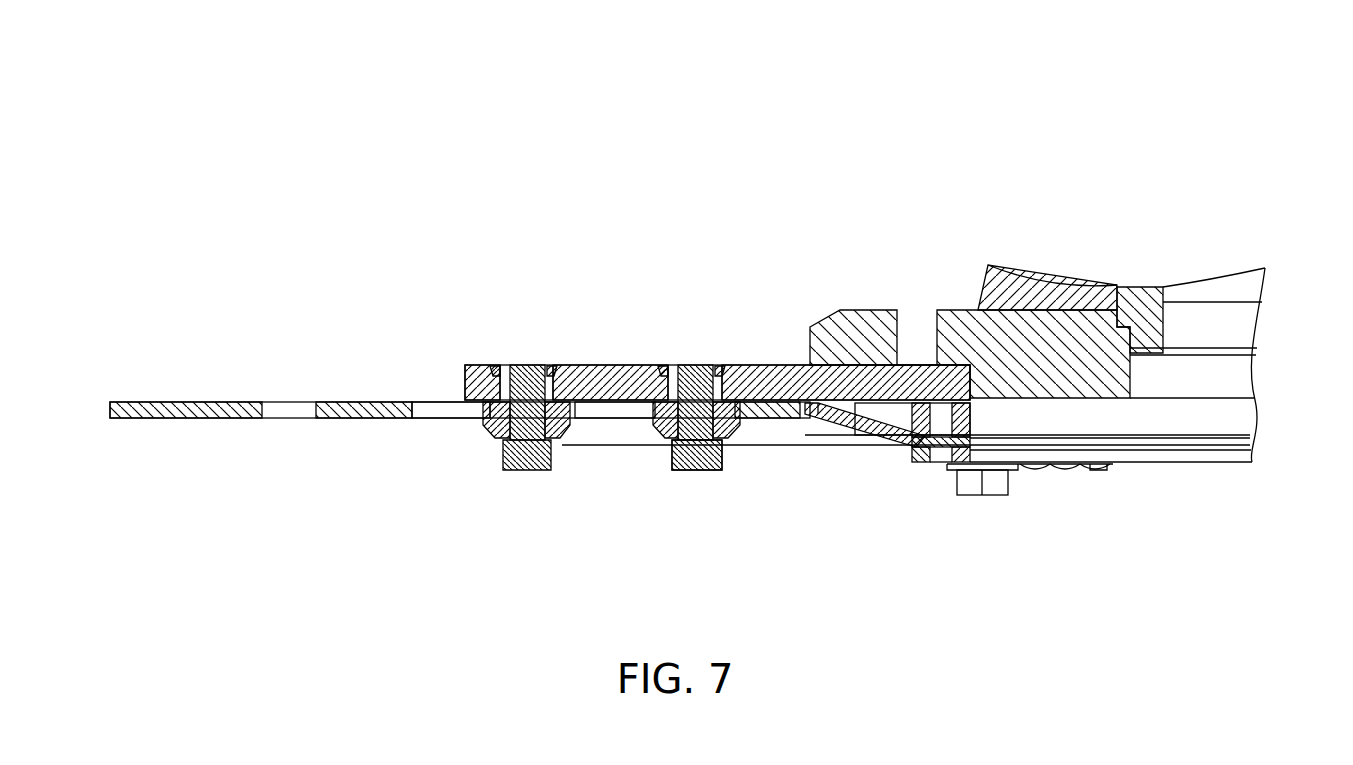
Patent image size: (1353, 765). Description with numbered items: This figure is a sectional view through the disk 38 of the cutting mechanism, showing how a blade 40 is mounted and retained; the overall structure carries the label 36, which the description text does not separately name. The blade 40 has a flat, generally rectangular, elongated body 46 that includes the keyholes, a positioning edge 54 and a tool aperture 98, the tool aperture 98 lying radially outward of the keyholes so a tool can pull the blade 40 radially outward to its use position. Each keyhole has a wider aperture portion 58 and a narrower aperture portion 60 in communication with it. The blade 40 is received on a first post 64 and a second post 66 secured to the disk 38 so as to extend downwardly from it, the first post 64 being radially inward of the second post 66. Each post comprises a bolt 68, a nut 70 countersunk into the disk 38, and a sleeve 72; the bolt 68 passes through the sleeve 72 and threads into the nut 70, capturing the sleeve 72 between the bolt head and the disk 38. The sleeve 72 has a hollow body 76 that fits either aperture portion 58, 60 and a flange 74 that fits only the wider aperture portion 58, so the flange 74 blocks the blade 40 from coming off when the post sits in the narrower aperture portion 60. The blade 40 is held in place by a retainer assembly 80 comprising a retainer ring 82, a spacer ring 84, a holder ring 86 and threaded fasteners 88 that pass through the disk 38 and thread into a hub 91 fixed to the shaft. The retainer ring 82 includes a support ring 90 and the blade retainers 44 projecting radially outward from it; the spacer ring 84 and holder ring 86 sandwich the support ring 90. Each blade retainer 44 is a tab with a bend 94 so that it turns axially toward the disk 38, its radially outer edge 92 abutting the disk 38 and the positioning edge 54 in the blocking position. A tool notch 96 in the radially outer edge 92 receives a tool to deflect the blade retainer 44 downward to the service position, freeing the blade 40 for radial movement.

The mounting assembly 36 is at (442, 105).
The disk 38 is at (590, 365).
The blade 40 is at (162, 390).
The blade retainer 44 is at (880, 430).
The body 46 is at (190, 420).
The positioning edge 54 is at (808, 420).
The wider aperture portion 58 is at (412, 420).
The narrower aperture portion 60 is at (560, 432).
The first post 64 is at (712, 478).
The second post 66 is at (527, 478).
The bolt 68 is at (510, 470).
The nut 70 is at (500, 365).
The sleeve 72 is at (487, 425).
The flange 74 is at (484, 430).
The hollow body 76 is at (490, 405).
The retainer assembly 80 is at (1050, 485).
The retainer ring 82 is at (1123, 443).
The spacer ring 84 is at (1222, 420).
The holder ring 86 is at (1222, 457).
The threaded fasteners 88 is at (966, 485).
The support ring 90 is at (1183, 441).
The hub 91 is at (873, 310).
The radially outer edge 92 is at (808, 365).
The bend 94 is at (912, 445).
The tool notch 96 is at (830, 430).
The tool aperture 98 is at (312, 420).